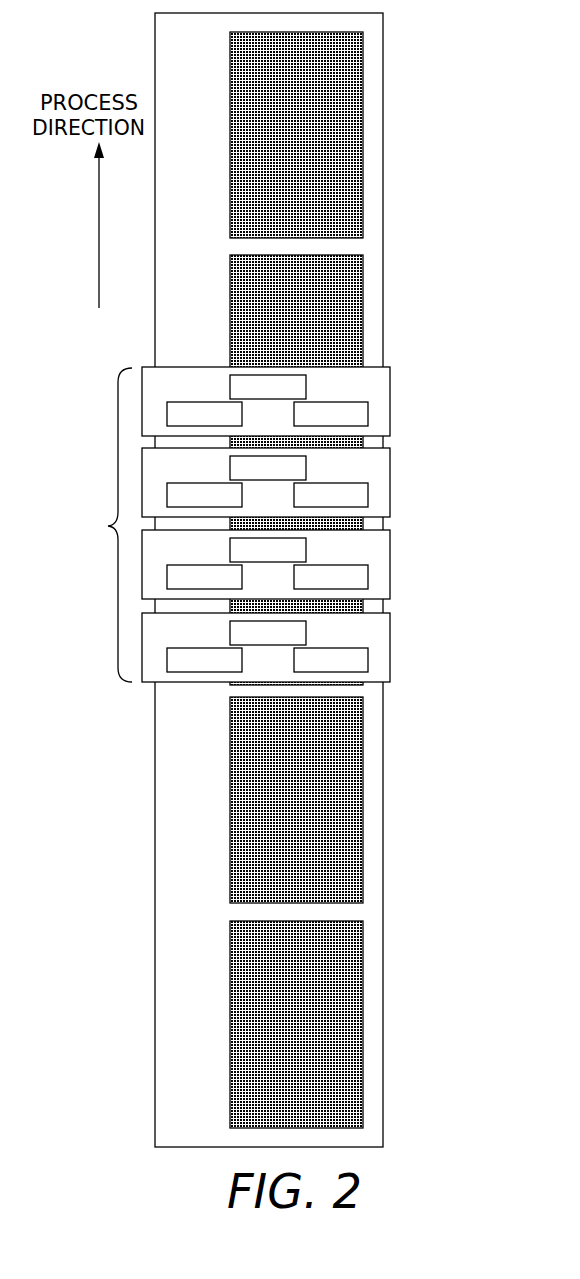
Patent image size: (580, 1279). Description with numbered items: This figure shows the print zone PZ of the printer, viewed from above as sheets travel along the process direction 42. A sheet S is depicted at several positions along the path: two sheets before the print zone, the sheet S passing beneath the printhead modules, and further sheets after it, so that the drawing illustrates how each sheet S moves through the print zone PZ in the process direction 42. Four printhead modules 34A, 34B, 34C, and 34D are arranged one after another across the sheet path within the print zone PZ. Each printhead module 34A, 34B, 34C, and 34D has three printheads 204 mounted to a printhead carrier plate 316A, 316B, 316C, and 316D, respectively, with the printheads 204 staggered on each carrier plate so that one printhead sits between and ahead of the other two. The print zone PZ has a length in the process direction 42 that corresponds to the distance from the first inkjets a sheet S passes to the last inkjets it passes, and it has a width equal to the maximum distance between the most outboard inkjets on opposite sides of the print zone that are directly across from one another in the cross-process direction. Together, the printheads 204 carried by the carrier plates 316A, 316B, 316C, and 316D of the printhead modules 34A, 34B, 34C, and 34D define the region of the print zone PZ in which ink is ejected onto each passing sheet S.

The sheet / substrate S is at (363, 145).
The process direction arrow 42 is at (143, 266).
The print zone PZ is at (104, 525).
The printheads 204 is at (267, 523).
The printhead carrier plate 316A is at (392, 637).
The printhead carrier plate 316B is at (392, 554).
The printhead carrier plate 316C is at (392, 467).
The printhead carrier plate 316D is at (392, 384).
The printhead module 34A is at (330, 647).
The printhead module 34B is at (330, 564).
The printhead module 34C is at (330, 480).
The printhead module 34D is at (330, 398).